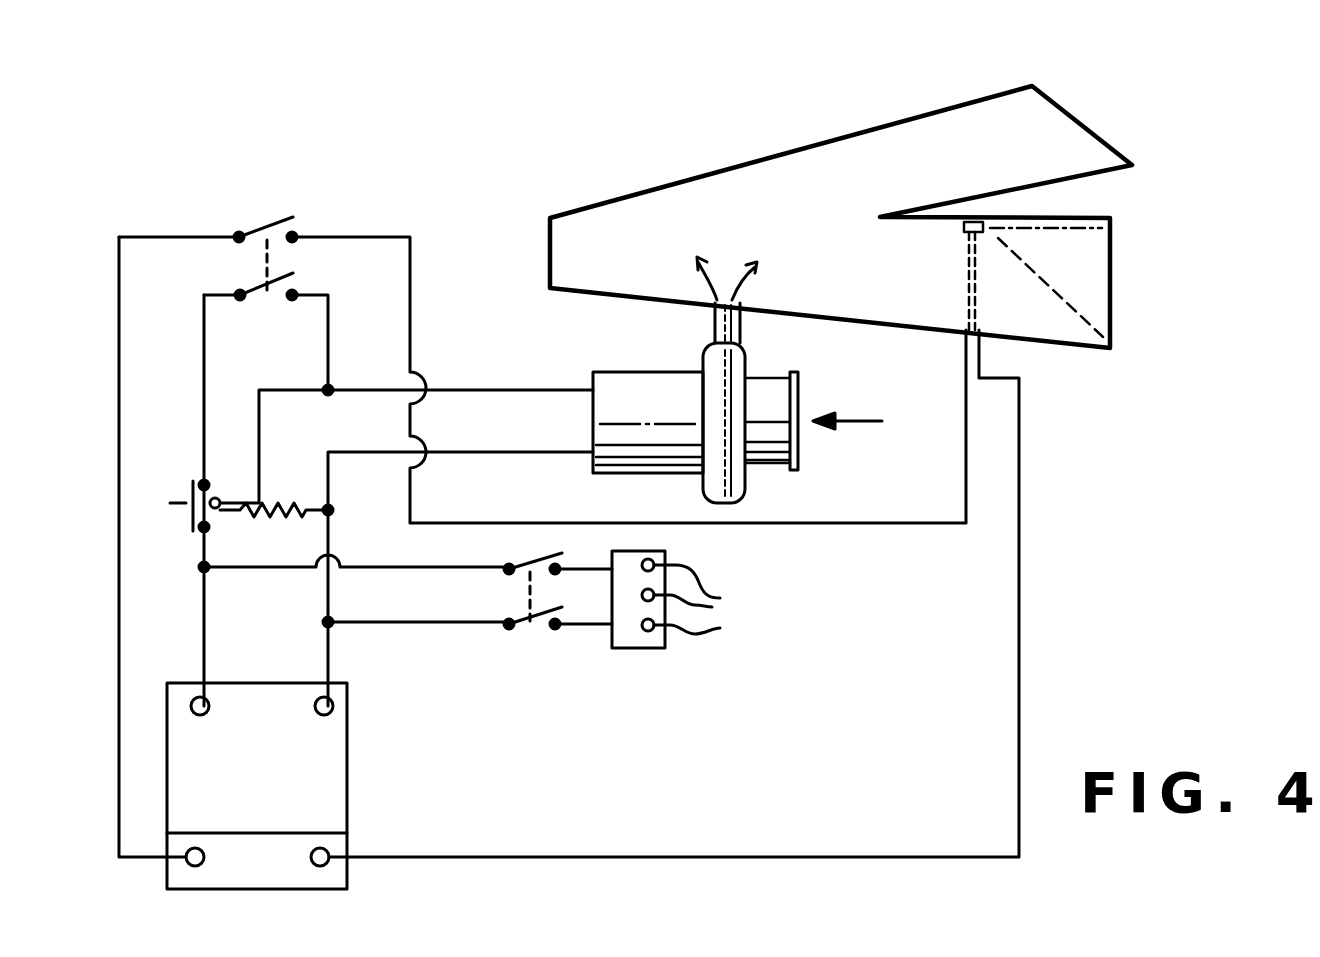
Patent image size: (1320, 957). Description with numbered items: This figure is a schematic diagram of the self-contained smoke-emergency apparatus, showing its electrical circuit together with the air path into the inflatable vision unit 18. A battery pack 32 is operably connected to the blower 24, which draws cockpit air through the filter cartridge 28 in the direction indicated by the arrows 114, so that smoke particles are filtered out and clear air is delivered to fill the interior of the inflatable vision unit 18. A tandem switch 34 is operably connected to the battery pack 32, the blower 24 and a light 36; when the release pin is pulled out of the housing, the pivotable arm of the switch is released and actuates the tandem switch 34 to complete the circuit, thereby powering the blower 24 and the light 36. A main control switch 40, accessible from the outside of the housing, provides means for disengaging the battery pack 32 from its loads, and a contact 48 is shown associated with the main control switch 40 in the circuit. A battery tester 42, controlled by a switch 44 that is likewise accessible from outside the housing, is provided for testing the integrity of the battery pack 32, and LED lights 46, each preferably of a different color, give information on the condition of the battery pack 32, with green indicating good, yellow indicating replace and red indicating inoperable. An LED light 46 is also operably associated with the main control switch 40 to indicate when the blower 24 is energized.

The inflatable vision unit 18 is at (748, 164).
The blower 24 is at (615, 372).
The filter cartridge 28 is at (780, 465).
The battery pack 32 is at (347, 768).
The tandem switch 34 is at (294, 235).
The light 36 is at (985, 228).
The main control switch 40 is at (187, 495).
The battery tester 42 is at (634, 648).
The switch 44 is at (532, 622).
The LED lights 46 is at (709, 599).
The relay contact 48 is at (217, 509).
The arrows 114 is at (848, 421).